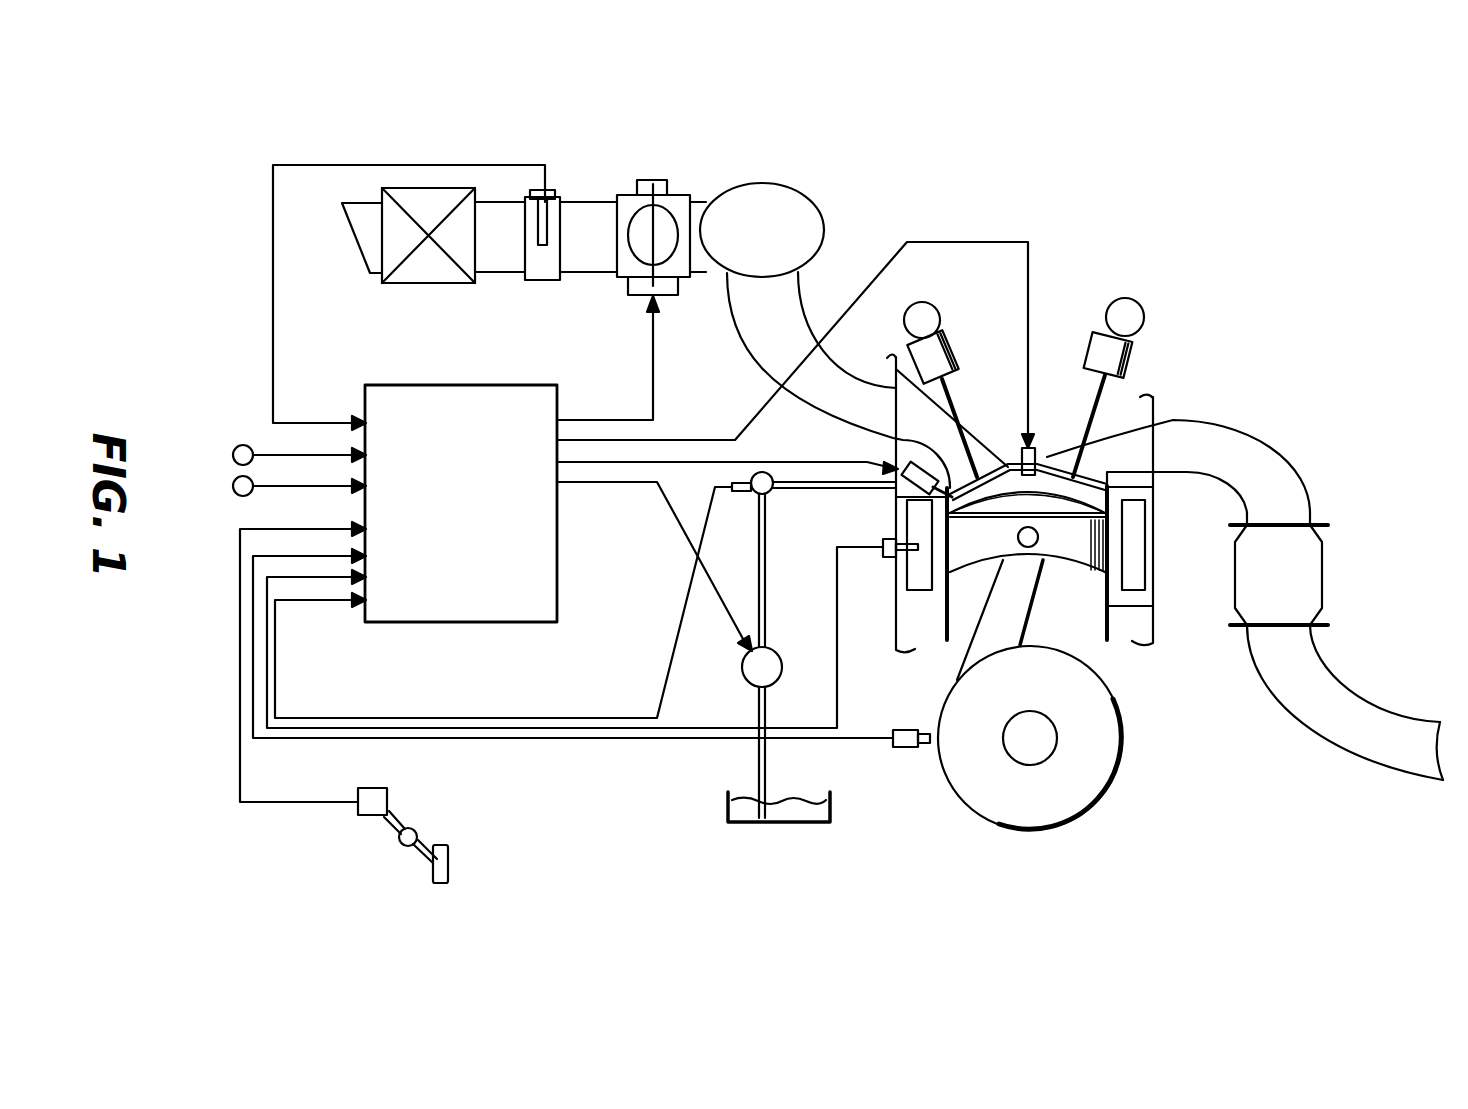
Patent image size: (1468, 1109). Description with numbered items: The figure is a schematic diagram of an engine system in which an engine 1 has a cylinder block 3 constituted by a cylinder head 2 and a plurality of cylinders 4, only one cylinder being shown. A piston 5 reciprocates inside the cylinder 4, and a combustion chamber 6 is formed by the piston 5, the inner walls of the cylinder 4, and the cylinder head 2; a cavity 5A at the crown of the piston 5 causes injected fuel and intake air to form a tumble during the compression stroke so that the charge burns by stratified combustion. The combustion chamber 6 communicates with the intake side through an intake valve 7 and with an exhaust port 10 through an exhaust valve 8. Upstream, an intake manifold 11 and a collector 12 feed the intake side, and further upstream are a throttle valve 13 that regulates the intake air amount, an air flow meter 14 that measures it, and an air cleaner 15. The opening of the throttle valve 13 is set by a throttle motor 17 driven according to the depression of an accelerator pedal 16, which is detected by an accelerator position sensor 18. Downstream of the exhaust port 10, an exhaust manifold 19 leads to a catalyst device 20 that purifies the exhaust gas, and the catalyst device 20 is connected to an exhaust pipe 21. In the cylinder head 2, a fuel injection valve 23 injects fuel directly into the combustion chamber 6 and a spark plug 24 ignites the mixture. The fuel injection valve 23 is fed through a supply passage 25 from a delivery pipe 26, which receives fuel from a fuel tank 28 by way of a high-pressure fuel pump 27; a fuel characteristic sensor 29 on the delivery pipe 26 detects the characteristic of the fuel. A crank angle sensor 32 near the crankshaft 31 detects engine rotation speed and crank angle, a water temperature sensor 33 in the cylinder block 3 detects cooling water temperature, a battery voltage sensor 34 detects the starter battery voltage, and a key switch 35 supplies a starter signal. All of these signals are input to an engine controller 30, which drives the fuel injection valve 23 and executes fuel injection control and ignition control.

The engine 1 is at (1090, 168).
The cylinder head 2 is at (1168, 399).
The cylinder block 3 is at (1168, 642).
The cylinder 4 is at (1153, 606).
The piston 5 is at (1077, 553).
The cavity 5A is at (1003, 508).
The combustion chamber 6 is at (1057, 487).
The intake valve 7 is at (952, 341).
The exhaust valve 8 is at (1133, 346).
The exhaust port 10 is at (1140, 448).
The intake manifold 11 is at (803, 318).
The collector 12 is at (813, 209).
The throttle valve 13 is at (676, 195).
The air flow meter 14 is at (561, 197).
The air cleaner 15 is at (446, 188).
The accelerator pedal 16 is at (440, 852).
The throttle motor 17 is at (632, 296).
The accelerator position sensor 18 is at (388, 798).
The exhaust manifold 19 is at (900, 393).
The catalyst device 20 is at (1300, 573).
The exhaust pipe 21 is at (1333, 700).
The fuel injection valve 23 is at (930, 472).
The spark plug 24 is at (1032, 447).
The supply passage 25 is at (858, 492).
The delivery pipe 26 is at (771, 490).
The high-pressure fuel pump 27 is at (778, 657).
The fuel tank 28 is at (805, 800).
The fuel characteristic sensor 29 is at (741, 492).
The engine controller 30 is at (447, 385).
The crankshaft 31 is at (1050, 752).
The crank angle sensor 32 is at (906, 748).
The water temperature sensor 33 is at (885, 558).
The battery voltage sensor 34 is at (243, 445).
The key switch 35 is at (236, 494).